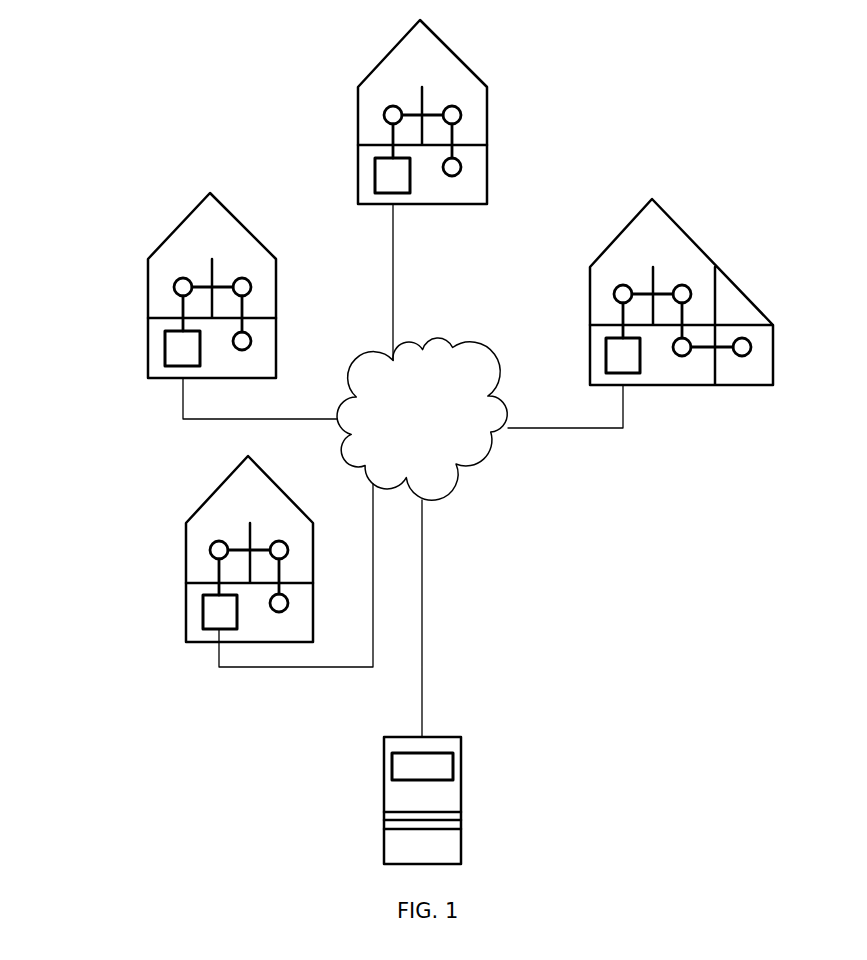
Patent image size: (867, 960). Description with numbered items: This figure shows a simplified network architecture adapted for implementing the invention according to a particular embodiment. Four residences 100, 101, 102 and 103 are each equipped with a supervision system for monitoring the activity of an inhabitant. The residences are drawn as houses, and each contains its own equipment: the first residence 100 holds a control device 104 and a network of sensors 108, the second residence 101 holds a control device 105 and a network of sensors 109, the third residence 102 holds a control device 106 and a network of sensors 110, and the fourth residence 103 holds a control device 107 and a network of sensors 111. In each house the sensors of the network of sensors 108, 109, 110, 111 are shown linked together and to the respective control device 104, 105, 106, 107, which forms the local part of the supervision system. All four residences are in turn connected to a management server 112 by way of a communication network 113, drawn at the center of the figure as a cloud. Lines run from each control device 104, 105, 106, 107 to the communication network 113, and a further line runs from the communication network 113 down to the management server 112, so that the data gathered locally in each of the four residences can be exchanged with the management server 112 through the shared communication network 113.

The residence 100 is at (385, 62).
The residence 101 is at (175, 233).
The residence 102 is at (215, 490).
The residence 103 is at (640, 210).
The control device 104 is at (375, 172).
The control device 105 is at (165, 350).
The control device 106 is at (203, 613).
The control device 107 is at (604, 350).
The network of sensors 108 is at (385, 113).
The network of sensors 109 is at (173, 284).
The network of sensors 110 is at (210, 548).
The network of sensors 111 is at (615, 293).
The management server 112 is at (384, 778).
The communication network 113 is at (480, 470).